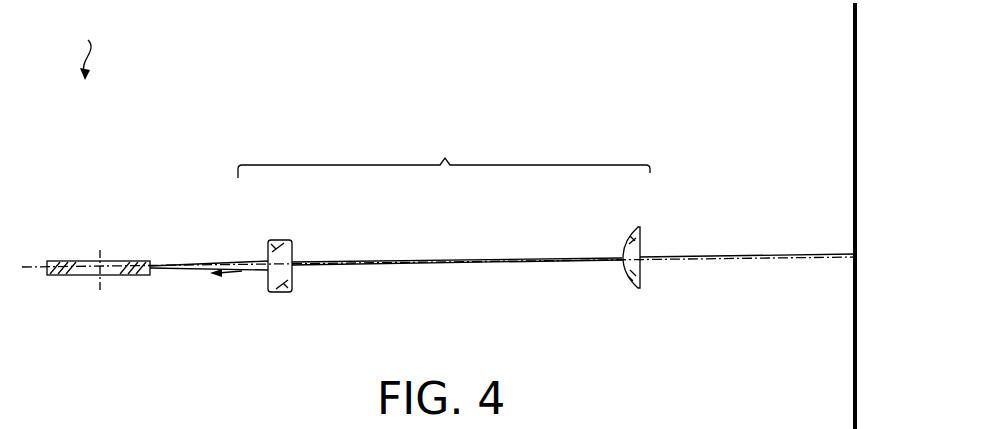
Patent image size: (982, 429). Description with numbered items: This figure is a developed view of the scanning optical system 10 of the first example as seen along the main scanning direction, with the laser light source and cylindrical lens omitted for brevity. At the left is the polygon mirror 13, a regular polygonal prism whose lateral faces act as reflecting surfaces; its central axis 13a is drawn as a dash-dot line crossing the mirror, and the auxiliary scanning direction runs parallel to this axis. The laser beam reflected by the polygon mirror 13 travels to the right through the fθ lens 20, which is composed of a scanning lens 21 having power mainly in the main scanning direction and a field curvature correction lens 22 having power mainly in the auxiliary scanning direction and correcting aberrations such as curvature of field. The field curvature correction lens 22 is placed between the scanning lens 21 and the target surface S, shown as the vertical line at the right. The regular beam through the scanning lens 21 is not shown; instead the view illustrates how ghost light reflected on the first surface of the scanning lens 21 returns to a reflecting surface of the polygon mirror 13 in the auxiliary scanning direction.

The scanning optical system 10 is at (74, 52).
The polygon mirror 13 is at (73, 261).
The central axis 13a is at (104, 281).
The fθ lens 20 is at (444, 155).
The scanning lens 21 is at (281, 240).
The field curvature correction lens 22 is at (629, 227).
The target surface S is at (855, 50).